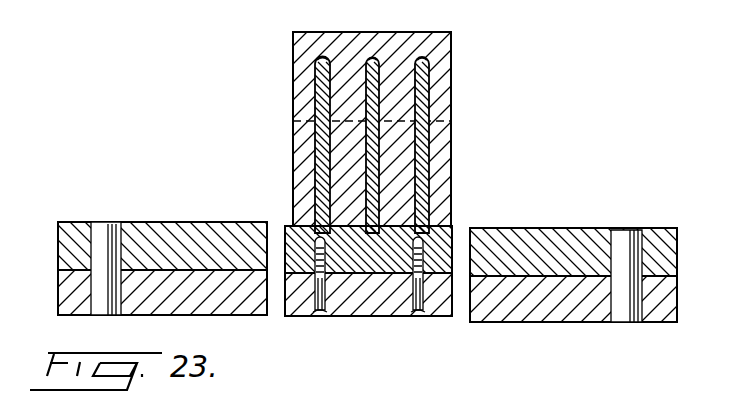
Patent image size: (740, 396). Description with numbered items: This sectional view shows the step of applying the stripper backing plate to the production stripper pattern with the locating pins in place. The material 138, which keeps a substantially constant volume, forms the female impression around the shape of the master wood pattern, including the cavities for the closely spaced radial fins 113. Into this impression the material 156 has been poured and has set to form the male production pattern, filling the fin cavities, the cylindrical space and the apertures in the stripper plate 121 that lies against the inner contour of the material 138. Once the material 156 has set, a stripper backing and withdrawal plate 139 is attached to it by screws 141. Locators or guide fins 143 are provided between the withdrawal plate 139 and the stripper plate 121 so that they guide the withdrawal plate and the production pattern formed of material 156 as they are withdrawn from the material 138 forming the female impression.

The material 138 is at (298, 40).
The material forming the male production pattern 156 is at (418, 64).
The fins 113 is at (322, 100).
The stripper plate 121 is at (507, 237).
The screws 141 is at (413, 314).
The locators or guide fins 143 is at (105, 237).
The stripper backing and withdrawal plate 139 is at (72, 290).